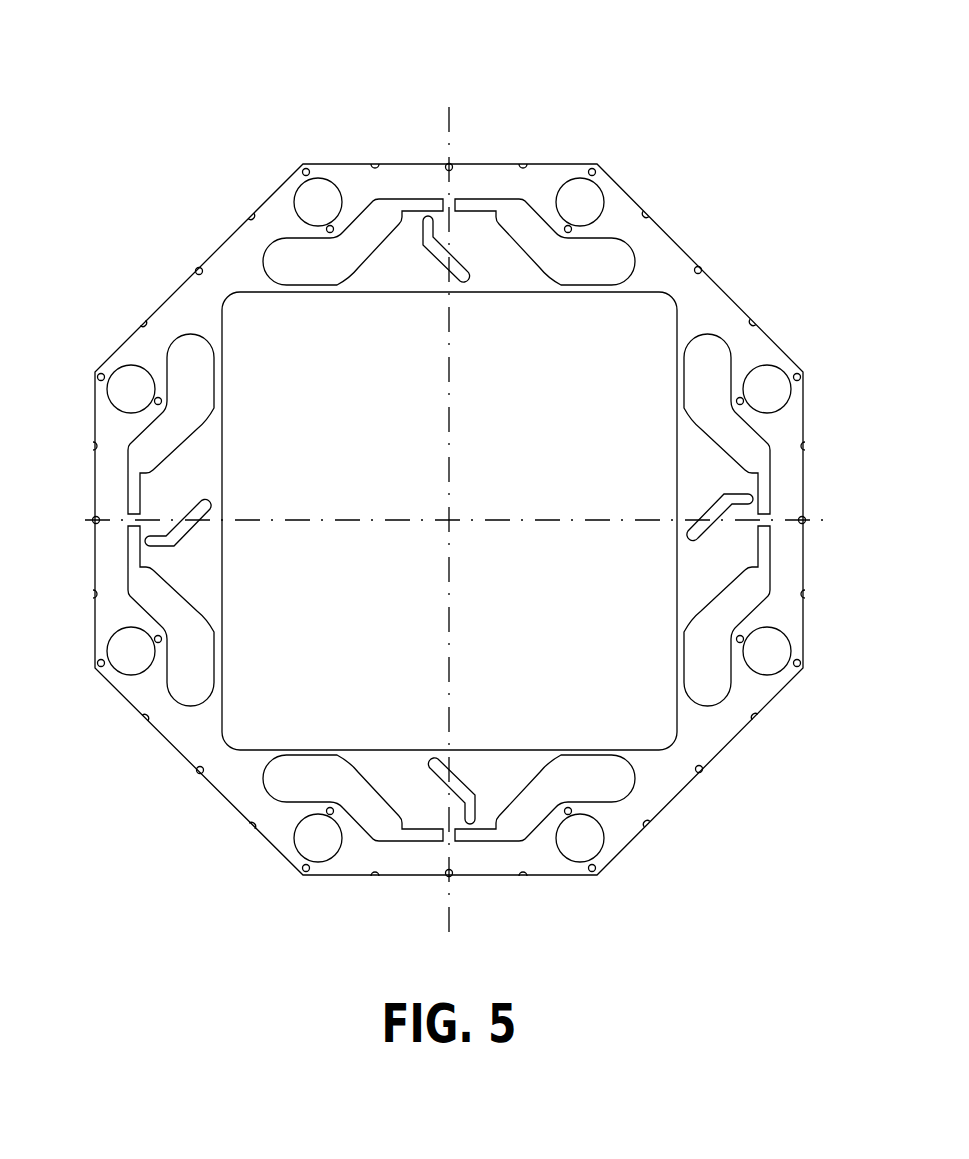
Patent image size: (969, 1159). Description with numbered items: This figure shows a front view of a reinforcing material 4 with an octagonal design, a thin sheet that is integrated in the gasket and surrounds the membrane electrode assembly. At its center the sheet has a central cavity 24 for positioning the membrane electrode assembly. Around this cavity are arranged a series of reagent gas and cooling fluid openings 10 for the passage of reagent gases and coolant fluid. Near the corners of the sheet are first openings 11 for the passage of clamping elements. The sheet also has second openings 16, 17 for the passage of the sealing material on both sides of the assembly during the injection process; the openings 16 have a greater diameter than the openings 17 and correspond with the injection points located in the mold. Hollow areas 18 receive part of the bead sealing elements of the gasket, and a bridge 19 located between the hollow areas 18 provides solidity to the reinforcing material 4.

The reinforcing material 4 is at (743, 695).
The reagent gas and cooling fluid openings 10 is at (188, 355).
The first opening 11 is at (572, 197).
The second opening 16 is at (738, 400).
The second opening 17 is at (593, 172).
The hollow area 18 is at (765, 549).
The bridge 19 is at (763, 522).
The central cavity 24 is at (555, 687).